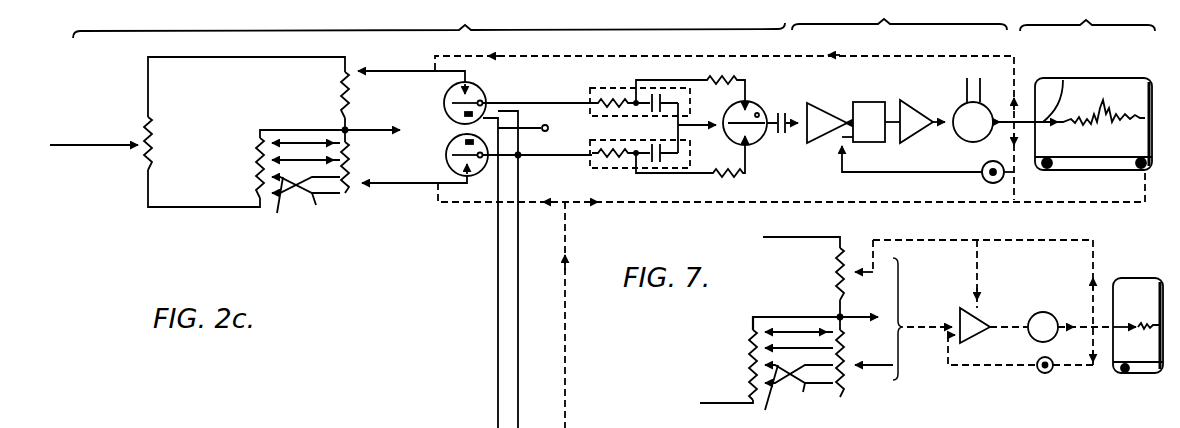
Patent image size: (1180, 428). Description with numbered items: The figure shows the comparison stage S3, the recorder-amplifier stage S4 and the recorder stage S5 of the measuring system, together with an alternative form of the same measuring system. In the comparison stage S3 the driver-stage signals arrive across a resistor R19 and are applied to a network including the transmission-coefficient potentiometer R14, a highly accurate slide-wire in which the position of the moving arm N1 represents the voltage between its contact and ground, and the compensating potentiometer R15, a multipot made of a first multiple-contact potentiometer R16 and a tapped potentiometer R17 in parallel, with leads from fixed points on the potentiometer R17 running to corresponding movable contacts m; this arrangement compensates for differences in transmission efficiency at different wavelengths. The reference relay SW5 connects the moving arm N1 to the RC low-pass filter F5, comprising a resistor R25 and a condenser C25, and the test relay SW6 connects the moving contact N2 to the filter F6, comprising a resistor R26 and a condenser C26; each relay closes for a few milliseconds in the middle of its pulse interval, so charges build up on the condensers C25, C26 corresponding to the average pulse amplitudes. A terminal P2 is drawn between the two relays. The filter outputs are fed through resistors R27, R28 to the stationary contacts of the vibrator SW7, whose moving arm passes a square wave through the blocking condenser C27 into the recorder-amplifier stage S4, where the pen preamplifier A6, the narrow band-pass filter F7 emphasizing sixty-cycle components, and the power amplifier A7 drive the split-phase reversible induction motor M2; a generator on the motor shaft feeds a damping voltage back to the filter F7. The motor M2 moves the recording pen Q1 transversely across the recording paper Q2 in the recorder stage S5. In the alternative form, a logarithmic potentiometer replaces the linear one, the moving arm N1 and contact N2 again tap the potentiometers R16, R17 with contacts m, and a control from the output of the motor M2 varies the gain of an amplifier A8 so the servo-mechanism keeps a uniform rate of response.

In FIG. 2C, the comparison stage S3 is at (429, 36).
In FIG. 2C, the recorder-amplifier stage S4 is at (899, 33).
In FIG. 2C, the recorder stage S5 is at (1087, 34).
In FIG. 2C, the resistor R19 is at (161, 143).
In FIG. 2C, the transmission-coefficient potentiometer R14 is at (358, 95).
In FIG. 7, the transmission-coefficient potentiometer R14 is at (830, 282).
In FIG. 2C, the tapped potentiometer R17 is at (246, 168).
In FIG. 7, the tapped potentiometer R17 is at (748, 374).
In FIG. 2C, the first multiple-contact potentiometer R16 is at (360, 168).
In FIG. 7, the first multiple-contact potentiometer R16 is at (845, 388).
In FIG. 2C, the compensating potentiometer R15 is at (316, 205).
In FIG. 7, the compensating potentiometer R15 is at (803, 392).
In FIG. 2C, the movable contacts m is at (272, 202).
In FIG. 7, the movable contacts m is at (767, 396).
In FIG. 2C, the moving arm N1 is at (426, 64).
In FIG. 7, the moving arm N1 is at (875, 276).
In FIG. 2C, the moving contact N2 is at (410, 200).
In FIG. 7, the moving contact N2 is at (888, 364).
In FIG. 2C, the reference relay SW5 is at (484, 90).
In FIG. 2C, the test relay SW6 is at (448, 165).
In FIG. 2C, the vibrator SW7 is at (756, 143).
In FIG. 2C, the terminal P2 is at (530, 134).
In FIG. 2C, the reference sample filter F5 is at (617, 86).
In FIG. 2C, the test sample filter F6 is at (608, 170).
In FIG. 2C, the narrow band-pass filter F7 is at (872, 101).
In FIG. 2C, the filter resistor R25 is at (610, 110).
In FIG. 2C, the filter resistor R26 is at (641, 136).
In FIG. 2C, the coupling resistor R27 is at (692, 80).
In FIG. 2C, the coupling resistor R28 is at (722, 170).
In FIG. 2C, the condenser C25 is at (656, 92).
In FIG. 2C, the condenser C26 is at (656, 164).
In FIG. 2C, the blocking condenser C27 is at (782, 114).
In FIG. 2C, the pen preamplifier A6 is at (824, 110).
In FIG. 2C, the power amplifier A7 is at (918, 110).
In FIG. 7, the amplifier A8 is at (966, 312).
In FIG. 2C, the split-phase reversible induction motor M2 is at (973, 110).
In FIG. 7, the split-phase reversible induction motor M2 is at (1046, 312).
In FIG. 2C, the recording pen Q1 is at (1063, 78).
In FIG. 2C, the recording paper Q2 is at (1086, 170).